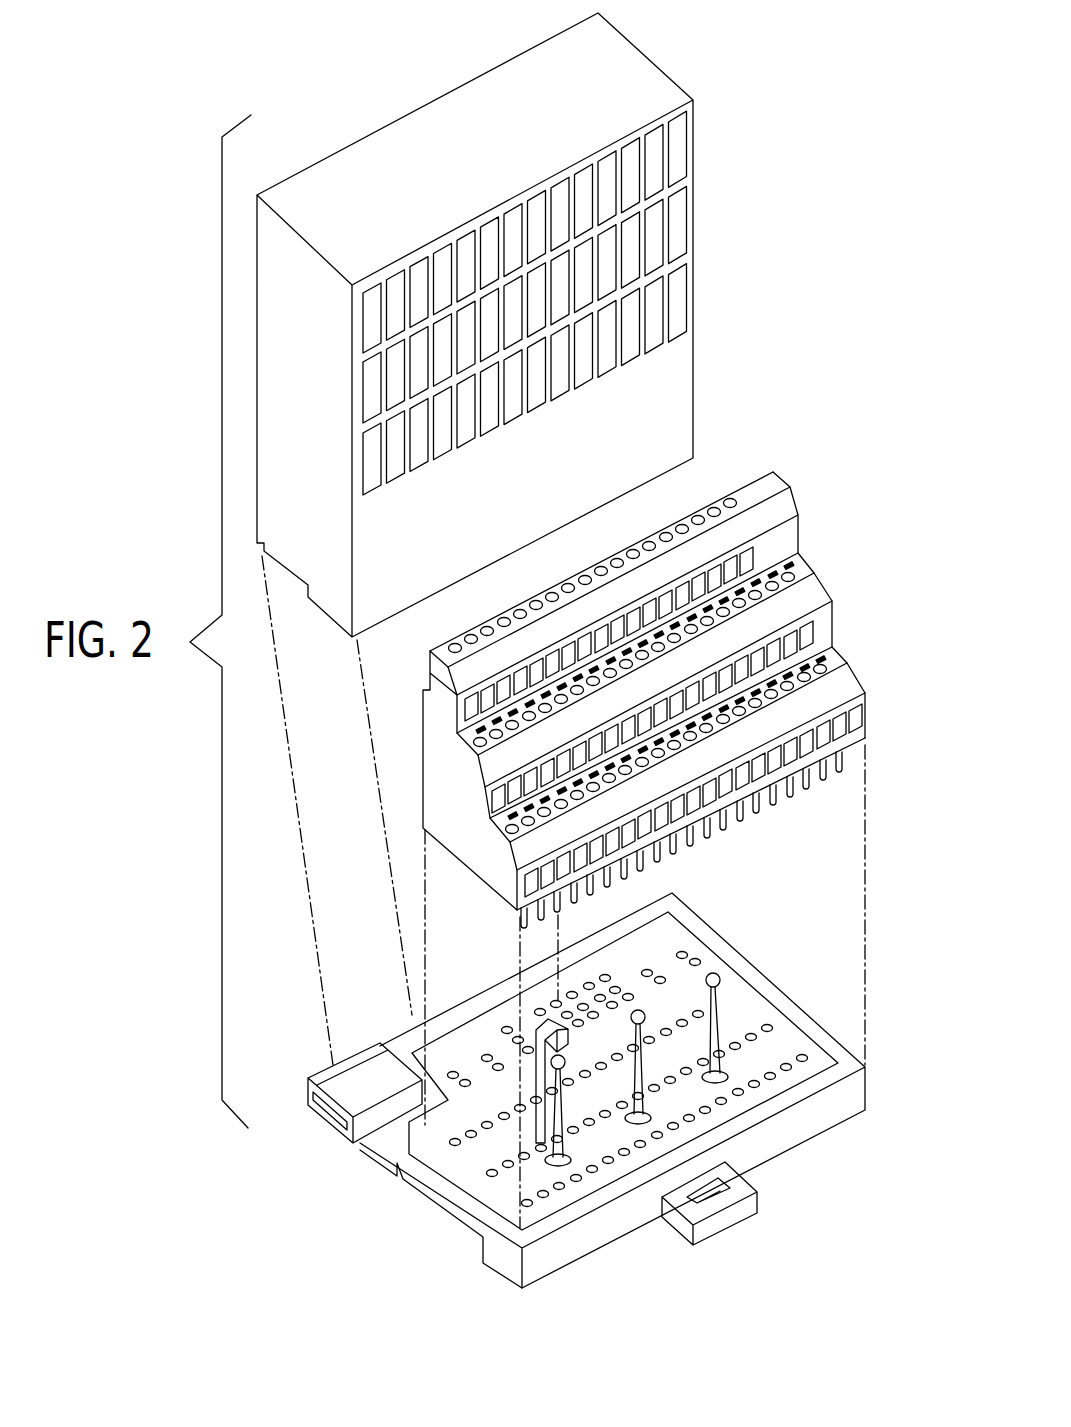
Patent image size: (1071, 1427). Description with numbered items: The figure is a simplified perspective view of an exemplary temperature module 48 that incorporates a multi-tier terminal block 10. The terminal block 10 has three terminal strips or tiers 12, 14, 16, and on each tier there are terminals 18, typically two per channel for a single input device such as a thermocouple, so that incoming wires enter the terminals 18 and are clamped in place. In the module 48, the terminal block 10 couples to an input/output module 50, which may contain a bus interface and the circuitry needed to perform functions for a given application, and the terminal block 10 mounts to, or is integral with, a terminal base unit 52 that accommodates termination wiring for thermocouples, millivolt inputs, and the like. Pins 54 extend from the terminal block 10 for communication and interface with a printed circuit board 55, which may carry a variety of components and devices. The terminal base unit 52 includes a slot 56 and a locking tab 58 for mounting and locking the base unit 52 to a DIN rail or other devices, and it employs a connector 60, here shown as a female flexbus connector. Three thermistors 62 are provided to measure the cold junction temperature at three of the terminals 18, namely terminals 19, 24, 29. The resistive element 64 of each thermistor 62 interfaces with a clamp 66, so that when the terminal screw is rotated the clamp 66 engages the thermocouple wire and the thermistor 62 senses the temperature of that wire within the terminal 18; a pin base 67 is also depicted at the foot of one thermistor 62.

The temperature module 48 is at (140, 158).
The input/output module 50 is at (625, 63).
The multi-tier terminal block 10 is at (677, 688).
The terminal tier 12 is at (772, 482).
The terminal tier 14 is at (802, 567).
The terminal tier 16 is at (835, 656).
The terminals 18 is at (643, 676).
The terminal 19 is at (554, 726).
The terminal 24 is at (643, 707).
The terminal 29 is at (731, 632).
The pins 54 is at (822, 772).
The terminal base unit 52 is at (822, 1115).
The printed circuit board 55 is at (500, 1187).
The slot 56 is at (422, 1202).
The locking tab 58 is at (727, 1233).
The connector 60 is at (332, 1127).
The thermistors 62 is at (716, 1010).
The resistive element 64 is at (563, 1057).
The clamp 66 is at (540, 1067).
The pin base 67 is at (558, 1167).